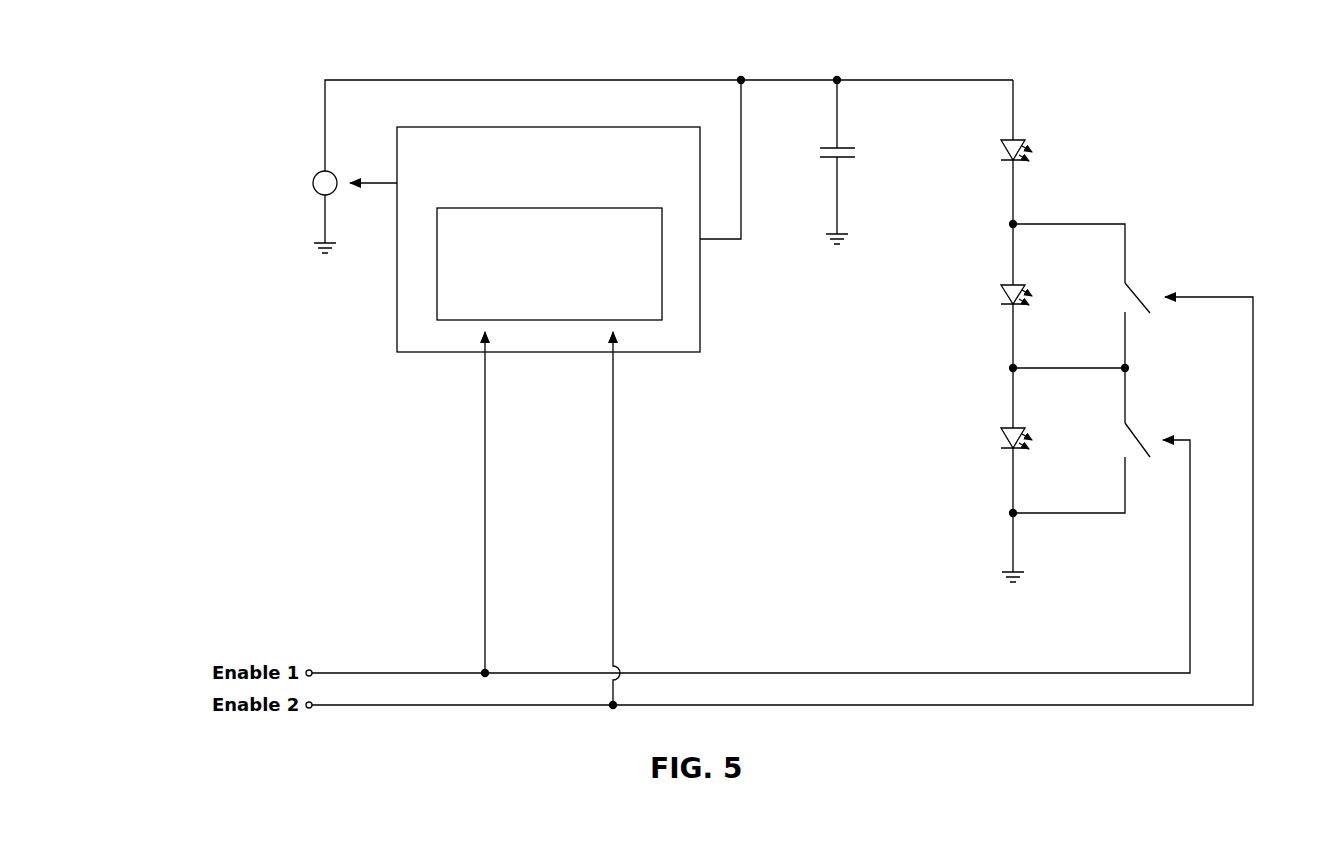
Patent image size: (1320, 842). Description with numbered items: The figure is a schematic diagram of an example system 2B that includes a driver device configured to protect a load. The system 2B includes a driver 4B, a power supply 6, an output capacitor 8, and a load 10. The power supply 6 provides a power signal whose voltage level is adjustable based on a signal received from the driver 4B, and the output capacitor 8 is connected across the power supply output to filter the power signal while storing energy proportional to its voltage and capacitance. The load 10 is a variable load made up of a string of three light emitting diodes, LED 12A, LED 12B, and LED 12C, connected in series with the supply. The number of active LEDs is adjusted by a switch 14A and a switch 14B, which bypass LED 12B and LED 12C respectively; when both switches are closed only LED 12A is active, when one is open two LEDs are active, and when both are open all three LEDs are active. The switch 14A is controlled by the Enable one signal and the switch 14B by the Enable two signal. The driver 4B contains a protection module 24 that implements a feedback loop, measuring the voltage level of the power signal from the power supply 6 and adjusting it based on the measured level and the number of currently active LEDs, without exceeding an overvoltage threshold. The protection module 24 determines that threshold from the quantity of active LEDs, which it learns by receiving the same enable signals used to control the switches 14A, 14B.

The system 2B is at (264, 90).
The power supply 6 is at (337, 197).
The driver 4B is at (548, 239).
The protection module 24 is at (549, 264).
The output capacitor 8 is at (848, 158).
The load 10 is at (1124, 126).
The LED 12A is at (998, 141).
The LED 12B is at (998, 285).
The LED 12C is at (998, 430).
The switch 14A is at (1125, 295).
The switch 14B is at (1125, 439).